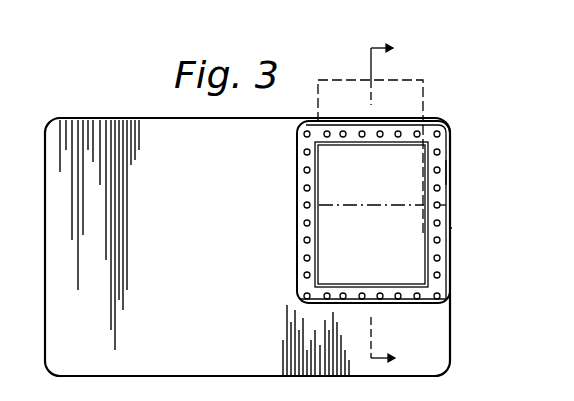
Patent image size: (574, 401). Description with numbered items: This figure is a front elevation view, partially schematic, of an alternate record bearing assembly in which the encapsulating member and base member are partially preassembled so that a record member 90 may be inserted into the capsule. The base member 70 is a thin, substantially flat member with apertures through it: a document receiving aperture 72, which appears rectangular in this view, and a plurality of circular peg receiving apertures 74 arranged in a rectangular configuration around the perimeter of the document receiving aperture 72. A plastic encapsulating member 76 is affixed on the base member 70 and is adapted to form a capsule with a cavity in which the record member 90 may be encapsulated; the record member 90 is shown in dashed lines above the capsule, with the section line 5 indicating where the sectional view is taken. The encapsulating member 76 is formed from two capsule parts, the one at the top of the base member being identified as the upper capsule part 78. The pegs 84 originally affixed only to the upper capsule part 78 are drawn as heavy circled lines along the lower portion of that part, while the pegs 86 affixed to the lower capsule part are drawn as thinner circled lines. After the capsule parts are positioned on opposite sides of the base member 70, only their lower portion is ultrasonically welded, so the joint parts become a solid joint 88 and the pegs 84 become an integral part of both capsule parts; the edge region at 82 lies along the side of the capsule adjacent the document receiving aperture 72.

The section line 5- 5 is at (390, 204).
The base member 70 is at (52, 258).
The document receiving aperture 72 is at (460, 212).
The peg receiving apertures 74 is at (450, 174).
The encapsulating member 76 is at (440, 127).
The upper capsule part 78 is at (440, 286).
The frame edge 82 is at (455, 229).
The pegs 84 is at (440, 241).
The pegs 86 is at (304, 170).
The solid joint 88 is at (318, 242).
The record member 90 is at (423, 80).